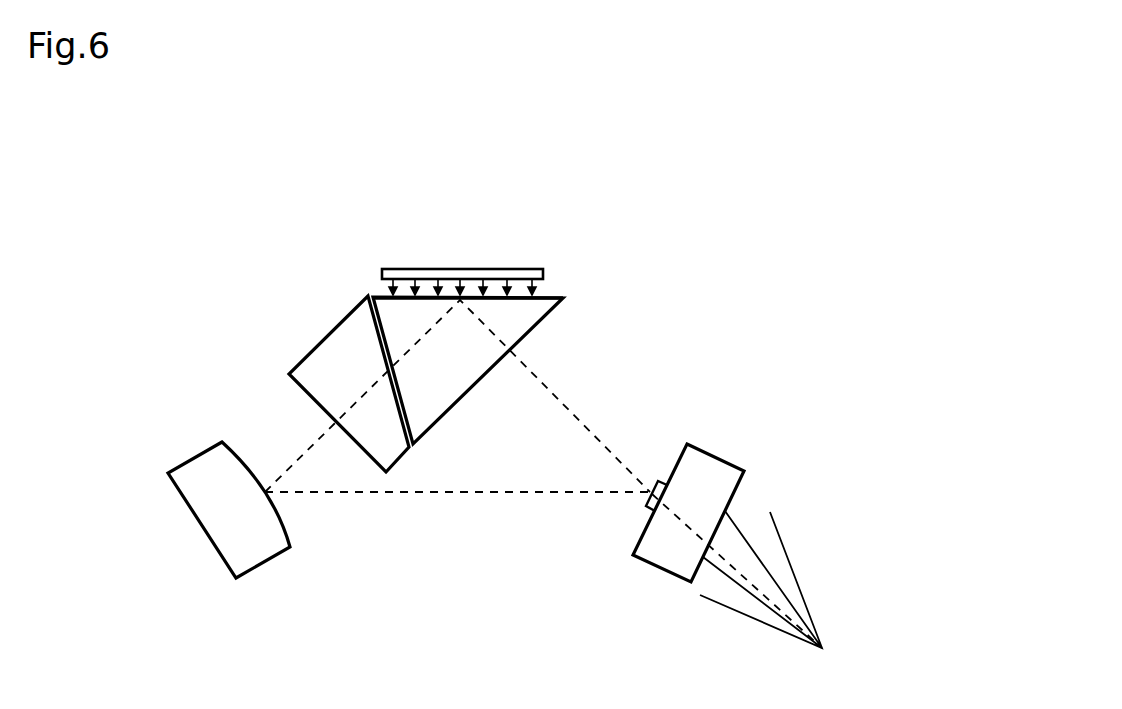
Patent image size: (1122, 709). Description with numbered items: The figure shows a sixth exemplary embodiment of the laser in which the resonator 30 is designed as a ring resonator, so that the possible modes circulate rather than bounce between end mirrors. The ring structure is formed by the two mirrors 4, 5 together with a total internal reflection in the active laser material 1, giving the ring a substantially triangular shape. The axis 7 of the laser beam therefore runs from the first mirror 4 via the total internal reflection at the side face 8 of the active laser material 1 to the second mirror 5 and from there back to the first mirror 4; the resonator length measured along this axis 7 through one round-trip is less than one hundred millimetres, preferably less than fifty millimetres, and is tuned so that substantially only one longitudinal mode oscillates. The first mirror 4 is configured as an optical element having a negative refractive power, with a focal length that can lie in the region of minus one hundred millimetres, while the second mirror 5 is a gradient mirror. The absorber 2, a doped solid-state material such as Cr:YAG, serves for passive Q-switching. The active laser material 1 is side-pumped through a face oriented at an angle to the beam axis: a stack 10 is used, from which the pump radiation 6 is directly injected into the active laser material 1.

The active laser material 1 is at (540, 307).
The absorber 2 is at (330, 360).
The first mirror 4 is at (240, 540).
The second mirror 5 is at (718, 472).
The pump radiation 6 is at (390, 287).
The axis of the laser beam 7 is at (442, 494).
The side face 8 is at (423, 298).
The stack 10 is at (467, 273).
The resonator 30 is at (644, 364).